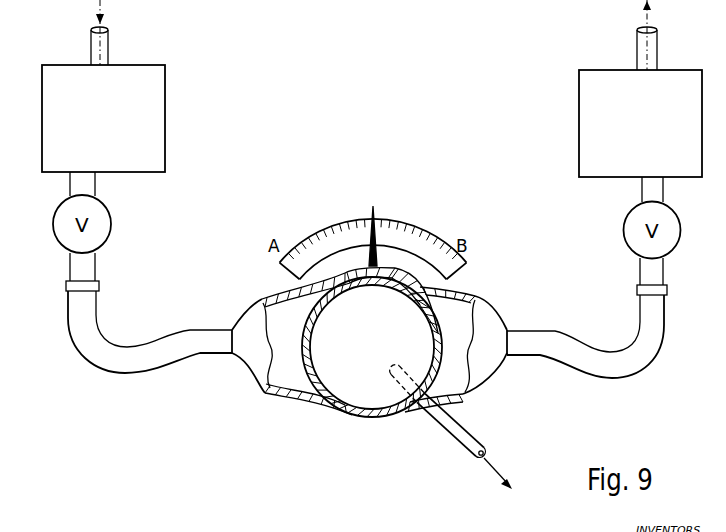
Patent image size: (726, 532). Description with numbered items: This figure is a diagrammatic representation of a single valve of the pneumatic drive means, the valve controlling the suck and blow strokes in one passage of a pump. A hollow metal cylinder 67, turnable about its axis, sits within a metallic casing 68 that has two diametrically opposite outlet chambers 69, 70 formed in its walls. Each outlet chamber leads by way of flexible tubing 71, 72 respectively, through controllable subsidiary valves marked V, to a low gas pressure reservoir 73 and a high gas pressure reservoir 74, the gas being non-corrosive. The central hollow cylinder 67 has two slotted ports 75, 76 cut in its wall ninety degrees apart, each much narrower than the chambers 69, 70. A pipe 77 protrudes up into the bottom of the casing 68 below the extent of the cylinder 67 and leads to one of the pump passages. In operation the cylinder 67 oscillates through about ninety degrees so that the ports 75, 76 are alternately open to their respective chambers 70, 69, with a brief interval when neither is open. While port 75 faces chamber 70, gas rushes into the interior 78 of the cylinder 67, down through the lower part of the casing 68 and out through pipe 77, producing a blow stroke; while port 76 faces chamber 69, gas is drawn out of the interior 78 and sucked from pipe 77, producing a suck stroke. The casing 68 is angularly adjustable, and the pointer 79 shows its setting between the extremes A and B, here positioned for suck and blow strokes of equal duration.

The hollow metal cylinder 67 is at (372, 417).
The metallic casing 68 is at (295, 400).
The outlet chamber 69 is at (463, 352).
The outlet chamber 70 is at (283, 375).
The flexible tubing 71 is at (640, 358).
The flexible tubing 72 is at (152, 360).
The low gas pressure reservoir 73 is at (592, 75).
The high gas pressure reservoir 74 is at (140, 72).
The slotted port 75 is at (343, 283).
The slotted port 76 is at (438, 309).
The pipe 77 is at (437, 412).
The interior of the metal cylinder 78 is at (348, 388).
The pointer 79 is at (376, 209).